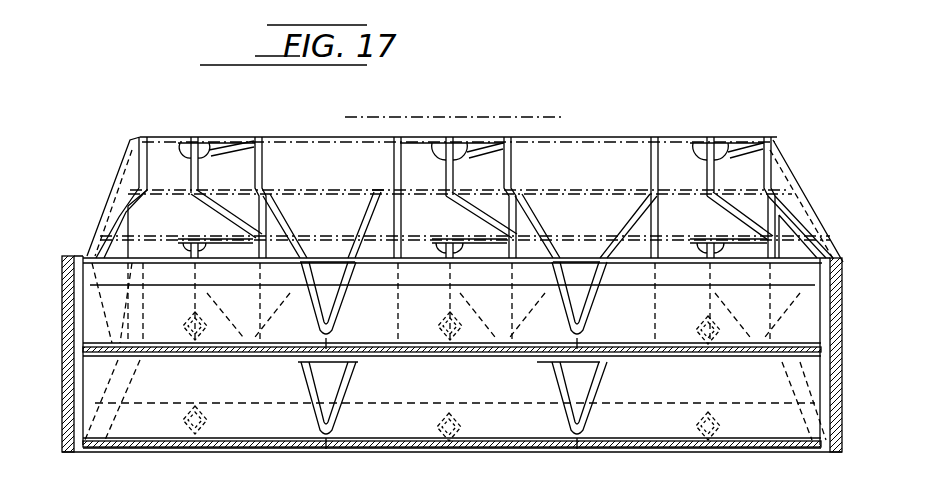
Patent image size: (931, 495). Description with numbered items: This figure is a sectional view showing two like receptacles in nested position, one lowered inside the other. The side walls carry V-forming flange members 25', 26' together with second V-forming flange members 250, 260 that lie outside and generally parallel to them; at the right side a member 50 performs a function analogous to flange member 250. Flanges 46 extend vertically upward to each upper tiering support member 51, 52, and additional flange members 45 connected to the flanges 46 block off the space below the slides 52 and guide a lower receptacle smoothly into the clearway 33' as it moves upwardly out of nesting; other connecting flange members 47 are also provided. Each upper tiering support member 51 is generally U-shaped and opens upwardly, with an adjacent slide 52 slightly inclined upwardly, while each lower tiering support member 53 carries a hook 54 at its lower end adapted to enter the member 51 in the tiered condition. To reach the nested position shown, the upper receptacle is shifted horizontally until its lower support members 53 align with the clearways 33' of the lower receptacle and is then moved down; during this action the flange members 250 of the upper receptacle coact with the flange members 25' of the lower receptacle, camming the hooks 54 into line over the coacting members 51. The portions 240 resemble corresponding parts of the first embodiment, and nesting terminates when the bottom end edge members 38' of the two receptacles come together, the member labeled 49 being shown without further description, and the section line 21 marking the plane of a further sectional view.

The section line 21 is at (550, 106).
The clearway 33' is at (465, 188).
The bottom end edge member 38' is at (432, 354).
The hook 54 is at (212, 450).
The flange 46 is at (200, 173).
The upper tiering support member 51 is at (183, 143).
The slide 52 is at (228, 143).
The connecting flange member 47 is at (255, 220).
The additional flange member 45 is at (228, 216).
The vertical member 49 is at (130, 218).
The end portion 240 is at (120, 212).
The member 50 is at (790, 394).
The V-forming flange member 25' is at (478, 299).
The V-forming flange member 26' is at (527, 282).
The second V-forming flange member 250 is at (280, 278).
The second V-forming flange member 260 is at (374, 268).
The lower tiering support member 53 is at (186, 320).